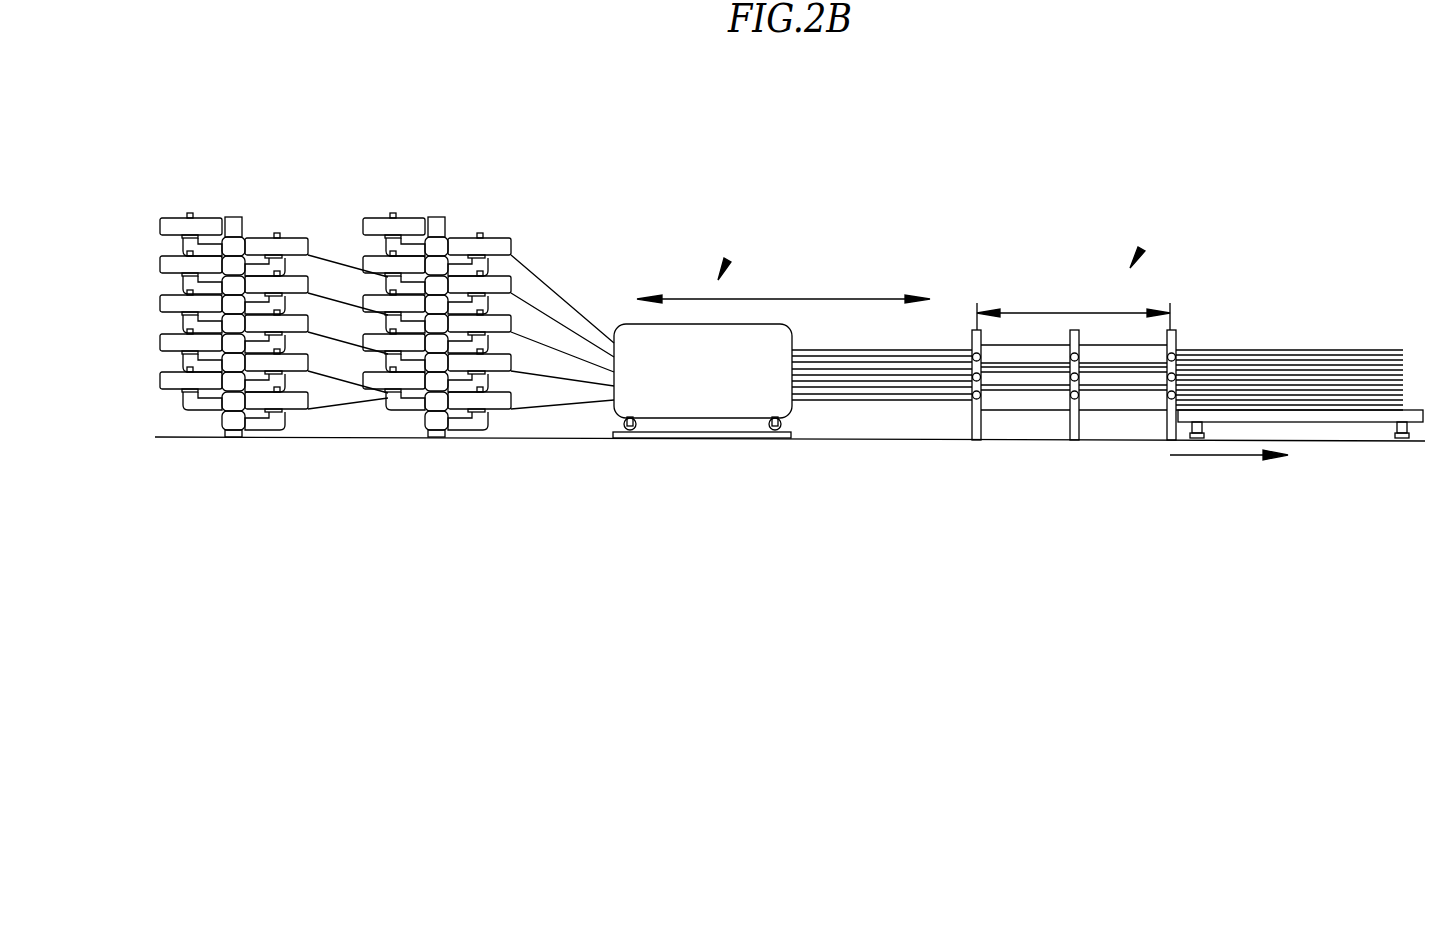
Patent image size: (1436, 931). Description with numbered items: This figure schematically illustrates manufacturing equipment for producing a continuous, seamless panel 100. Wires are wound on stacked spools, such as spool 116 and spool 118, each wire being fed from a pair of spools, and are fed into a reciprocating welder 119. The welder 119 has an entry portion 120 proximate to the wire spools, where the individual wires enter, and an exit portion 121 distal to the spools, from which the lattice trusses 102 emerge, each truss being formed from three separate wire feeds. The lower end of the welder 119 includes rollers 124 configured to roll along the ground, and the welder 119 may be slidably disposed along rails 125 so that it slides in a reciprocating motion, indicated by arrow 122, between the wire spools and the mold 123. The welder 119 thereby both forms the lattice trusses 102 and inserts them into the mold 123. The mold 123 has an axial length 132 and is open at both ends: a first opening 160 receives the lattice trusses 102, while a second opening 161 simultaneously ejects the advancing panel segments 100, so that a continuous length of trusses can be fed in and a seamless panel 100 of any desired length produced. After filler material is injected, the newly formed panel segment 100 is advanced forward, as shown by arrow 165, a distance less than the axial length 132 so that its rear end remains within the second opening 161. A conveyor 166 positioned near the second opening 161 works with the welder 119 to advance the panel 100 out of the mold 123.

The seamless panel 100 is at (1230, 350).
The lattice truss 102 is at (900, 402).
The spool 116 is at (280, 232).
The spool 118 is at (482, 235).
The reciprocating welder 119 is at (722, 272).
The entry portion 120 is at (614, 326).
The exit portion 121 is at (797, 373).
The arrow 122 is at (783, 299).
The mold 123 is at (1133, 263).
The rollers 124 is at (773, 432).
The rails 125 is at (797, 441).
The axial length 132 is at (1073, 313).
The first opening 160 is at (973, 355).
The second opening 161 is at (1180, 358).
The arrow 165 is at (1223, 460).
The conveyor 166 is at (1367, 416).